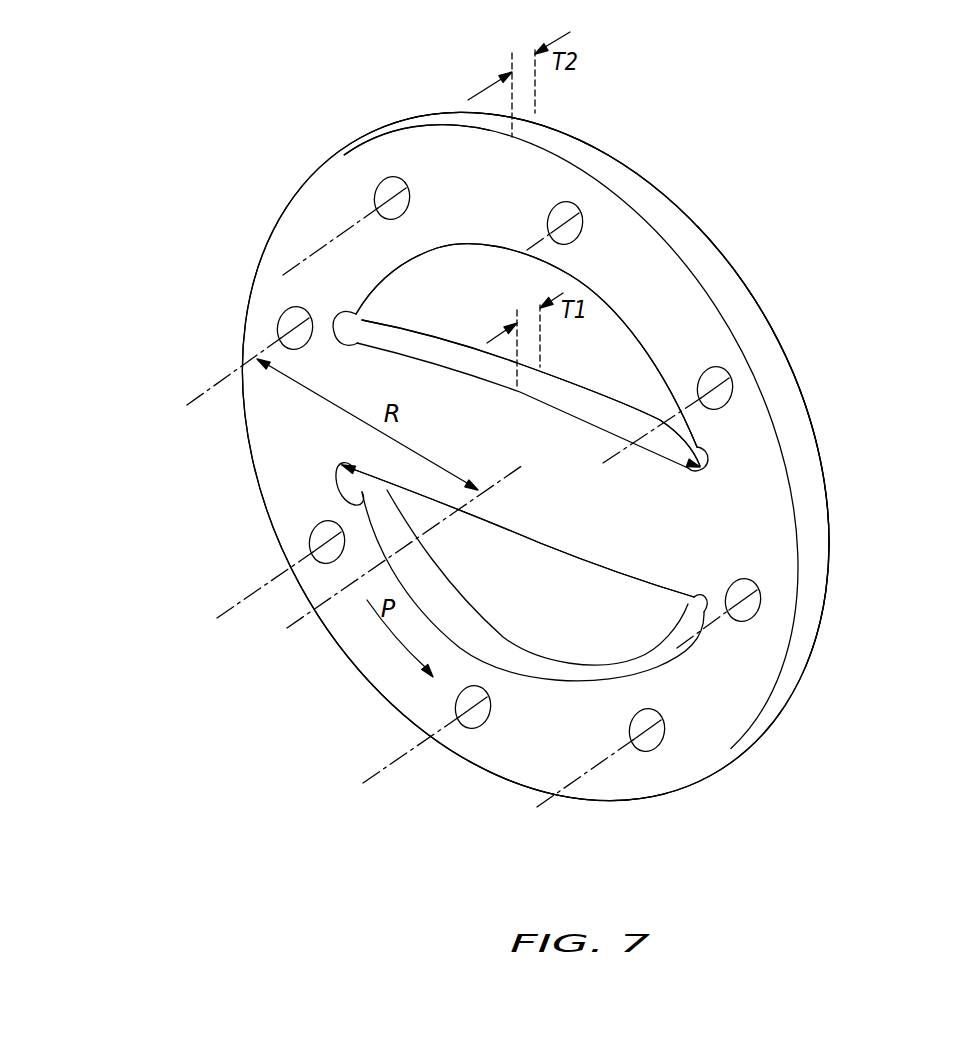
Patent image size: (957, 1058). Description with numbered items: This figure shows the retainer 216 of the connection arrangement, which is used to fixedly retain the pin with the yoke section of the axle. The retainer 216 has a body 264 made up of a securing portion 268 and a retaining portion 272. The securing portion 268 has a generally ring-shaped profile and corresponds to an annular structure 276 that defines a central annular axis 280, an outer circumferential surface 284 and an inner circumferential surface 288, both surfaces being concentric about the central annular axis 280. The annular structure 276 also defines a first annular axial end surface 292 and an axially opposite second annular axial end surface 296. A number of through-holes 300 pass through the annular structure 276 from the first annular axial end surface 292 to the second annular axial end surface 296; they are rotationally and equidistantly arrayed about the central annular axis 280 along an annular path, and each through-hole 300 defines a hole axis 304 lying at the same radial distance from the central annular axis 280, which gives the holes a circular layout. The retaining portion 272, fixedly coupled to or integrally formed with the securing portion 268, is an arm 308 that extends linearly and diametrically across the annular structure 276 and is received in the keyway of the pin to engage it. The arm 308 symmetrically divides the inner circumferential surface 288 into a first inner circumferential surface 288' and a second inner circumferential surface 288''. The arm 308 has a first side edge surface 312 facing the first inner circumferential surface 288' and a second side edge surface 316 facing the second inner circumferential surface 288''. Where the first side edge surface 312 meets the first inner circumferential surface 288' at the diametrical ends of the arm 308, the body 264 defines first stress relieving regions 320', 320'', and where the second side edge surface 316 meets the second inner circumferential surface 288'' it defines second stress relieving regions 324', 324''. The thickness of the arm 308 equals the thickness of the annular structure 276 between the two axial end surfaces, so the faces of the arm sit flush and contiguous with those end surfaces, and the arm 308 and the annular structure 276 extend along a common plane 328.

The retainer 216 is at (95, 172).
The body 264 is at (727, 262).
The securing portion 268 is at (697, 223).
The retaining portion 272 is at (624, 413).
The annular structure 276 is at (452, 107).
The central annular axis 280 is at (290, 630).
The outer circumferential surface 284 is at (423, 131).
The inner circumferential surface 288 is at (530, 462).
The first inner circumferential surface 288' is at (526, 345).
The second inner circumferential surface 288'' is at (537, 577).
The first annular axial end surface 292 is at (760, 552).
The second annular axial end surface 296 is at (760, 310).
The through-holes 300 is at (377, 190).
The hole axis 304 is at (528, 248).
The arm 308 is at (518, 538).
The first side edge surface 312 is at (578, 400).
The second side edge surface 316 is at (482, 527).
The first stress relieving region 320' is at (408, 316).
The first stress relieving region 320'' is at (788, 437).
The second stress relieving region 324' is at (248, 492).
The second stress relieving region 324'' is at (705, 713).
The common plane 328 is at (527, 747).